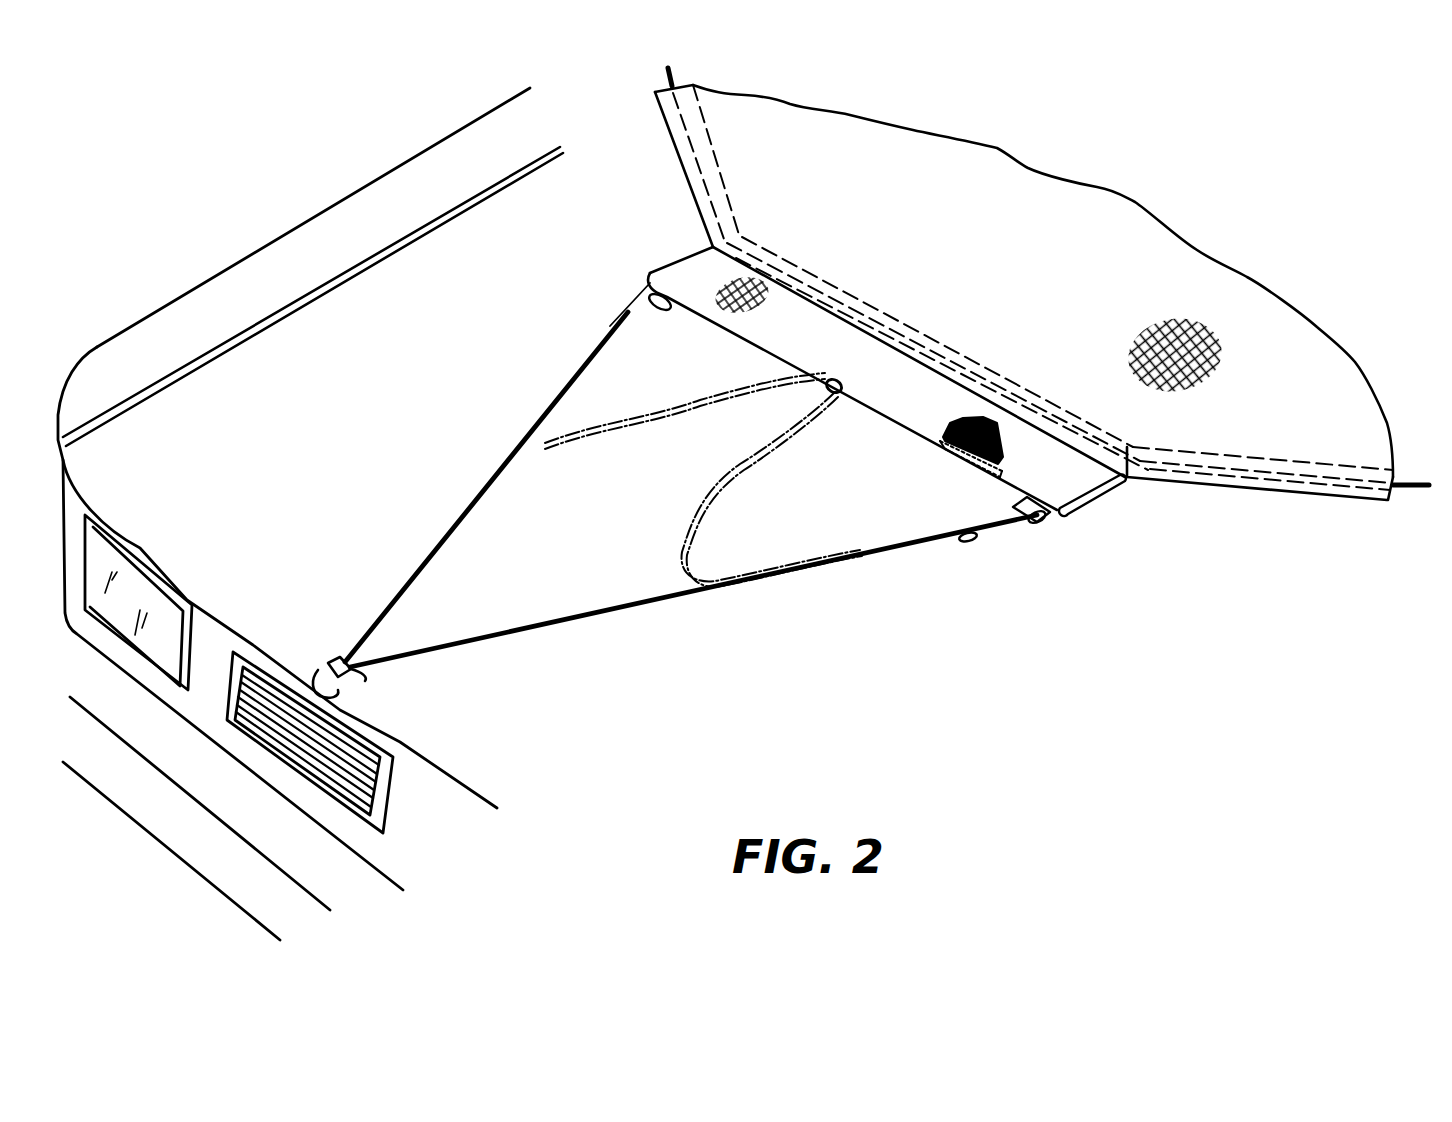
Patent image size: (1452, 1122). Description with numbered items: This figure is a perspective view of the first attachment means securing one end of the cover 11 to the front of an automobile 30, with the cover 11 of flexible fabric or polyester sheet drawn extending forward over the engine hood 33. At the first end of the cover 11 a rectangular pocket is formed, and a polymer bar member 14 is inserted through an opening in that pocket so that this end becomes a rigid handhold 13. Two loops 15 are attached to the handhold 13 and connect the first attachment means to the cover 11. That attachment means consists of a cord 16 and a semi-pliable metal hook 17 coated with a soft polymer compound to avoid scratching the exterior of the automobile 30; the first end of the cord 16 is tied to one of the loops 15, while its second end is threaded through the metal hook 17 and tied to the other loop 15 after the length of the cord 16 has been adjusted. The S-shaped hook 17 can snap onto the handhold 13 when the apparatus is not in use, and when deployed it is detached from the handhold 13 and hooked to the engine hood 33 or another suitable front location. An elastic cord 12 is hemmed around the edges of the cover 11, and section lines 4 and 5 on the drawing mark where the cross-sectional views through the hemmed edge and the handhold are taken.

The cover 11 is at (1273, 293).
The elastic cord 12 is at (665, 73).
The handhold 13 is at (673, 253).
The polymer bar member 14 is at (967, 463).
The loops 15 is at (1050, 513).
The cord 16 is at (613, 612).
The metal hook 17 is at (357, 677).
The automobile 30 is at (199, 283).
The engine hood 33 is at (340, 313).
The section line 4- 4 is at (1303, 417).
The section line 5- 5 is at (1077, 353).